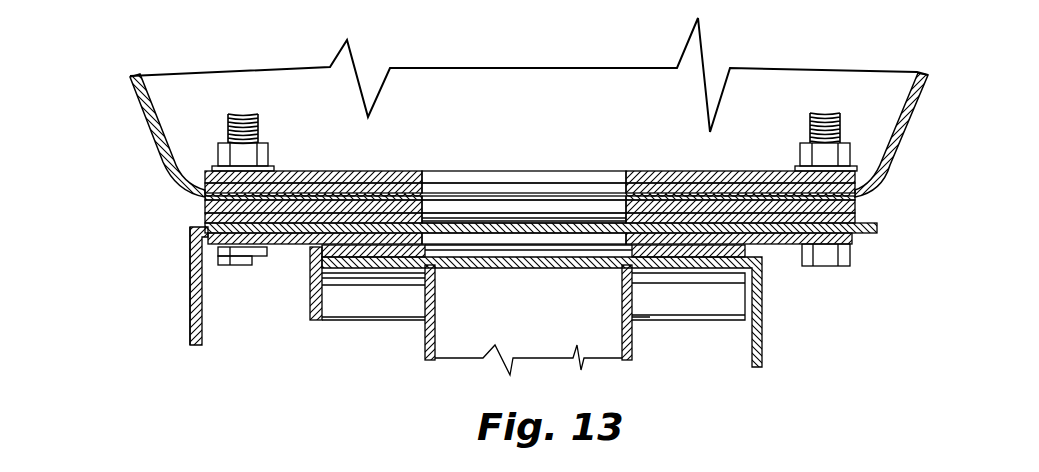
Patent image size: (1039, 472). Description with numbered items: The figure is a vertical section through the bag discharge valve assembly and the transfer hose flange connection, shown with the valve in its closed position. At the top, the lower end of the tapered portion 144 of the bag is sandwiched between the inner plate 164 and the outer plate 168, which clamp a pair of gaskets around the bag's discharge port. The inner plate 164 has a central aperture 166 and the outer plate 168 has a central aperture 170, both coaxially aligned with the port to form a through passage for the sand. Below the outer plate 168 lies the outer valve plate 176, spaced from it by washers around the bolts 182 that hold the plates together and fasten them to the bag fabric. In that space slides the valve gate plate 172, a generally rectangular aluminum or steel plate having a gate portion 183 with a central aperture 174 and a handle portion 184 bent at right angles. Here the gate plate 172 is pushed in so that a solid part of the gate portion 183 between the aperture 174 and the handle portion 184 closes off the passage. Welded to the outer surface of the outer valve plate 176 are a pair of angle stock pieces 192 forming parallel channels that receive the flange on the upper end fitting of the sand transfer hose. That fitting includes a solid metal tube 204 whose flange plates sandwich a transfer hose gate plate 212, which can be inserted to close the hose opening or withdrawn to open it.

The tapered portion 144 is at (898, 143).
The inner plate 164 is at (712, 172).
The central aperture 166 is at (516, 172).
The outer plate 168 is at (858, 206).
The central aperture 170 is at (563, 222).
The sliding valve gate plate 172 is at (190, 295).
The central aperture 174 is at (878, 231).
The outer valve plate 176 is at (773, 243).
The bolts 182 is at (532, 222).
The gate portion 183 is at (488, 233).
The handle portion 184 is at (197, 310).
The angle stock pieces 192 is at (683, 290).
The solid metal tube 204 is at (487, 347).
The transfer hose gate plate 212 is at (757, 367).